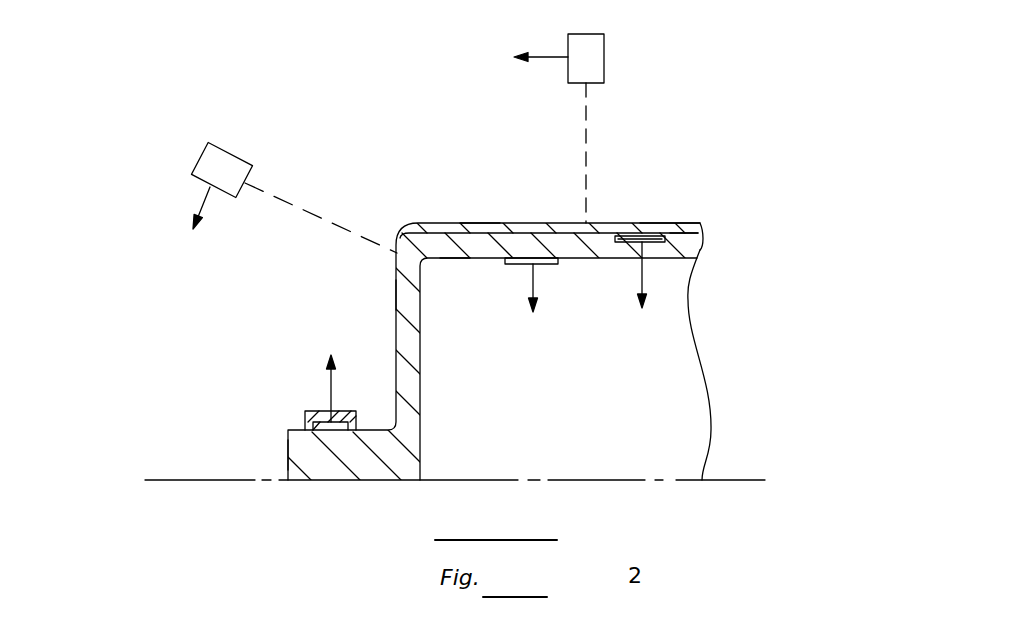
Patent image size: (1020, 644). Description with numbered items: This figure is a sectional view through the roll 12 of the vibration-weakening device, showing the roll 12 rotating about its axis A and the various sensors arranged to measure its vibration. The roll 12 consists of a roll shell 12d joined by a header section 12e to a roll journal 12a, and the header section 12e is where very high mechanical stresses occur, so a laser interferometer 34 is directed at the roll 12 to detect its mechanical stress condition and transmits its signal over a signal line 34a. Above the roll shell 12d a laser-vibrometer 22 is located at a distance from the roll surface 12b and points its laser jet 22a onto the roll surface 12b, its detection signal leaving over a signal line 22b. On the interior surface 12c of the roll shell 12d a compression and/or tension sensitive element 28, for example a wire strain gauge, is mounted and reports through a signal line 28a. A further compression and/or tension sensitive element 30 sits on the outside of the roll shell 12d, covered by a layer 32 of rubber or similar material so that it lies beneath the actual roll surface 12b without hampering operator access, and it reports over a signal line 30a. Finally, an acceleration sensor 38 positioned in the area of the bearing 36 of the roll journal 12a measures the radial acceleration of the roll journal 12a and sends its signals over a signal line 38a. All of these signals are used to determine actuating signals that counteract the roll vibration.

The roll 12 is at (362, 137).
The roll journal 12a is at (332, 467).
The roll surface 12b is at (672, 216).
The interior surface 12c is at (455, 268).
The roll shell 12d is at (690, 247).
The header section 12e is at (396, 293).
The laser-vibrometer 22 is at (598, 49).
The laser jet 22a is at (586, 180).
The signal line 22b is at (550, 58).
The compression and/or tension sensitive element 28 is at (547, 265).
The signal line 28a is at (535, 292).
The compression and/or tension sensitive element 30 is at (655, 243).
The signal line 30a is at (644, 285).
The layer 32 is at (482, 222).
The laser interferometer 34 is at (208, 153).
The signal line 34a is at (204, 207).
The bearing 36 is at (305, 414).
The acceleration sensor 38 is at (347, 413).
The signal line 38a is at (330, 385).
The axis A is at (171, 478).